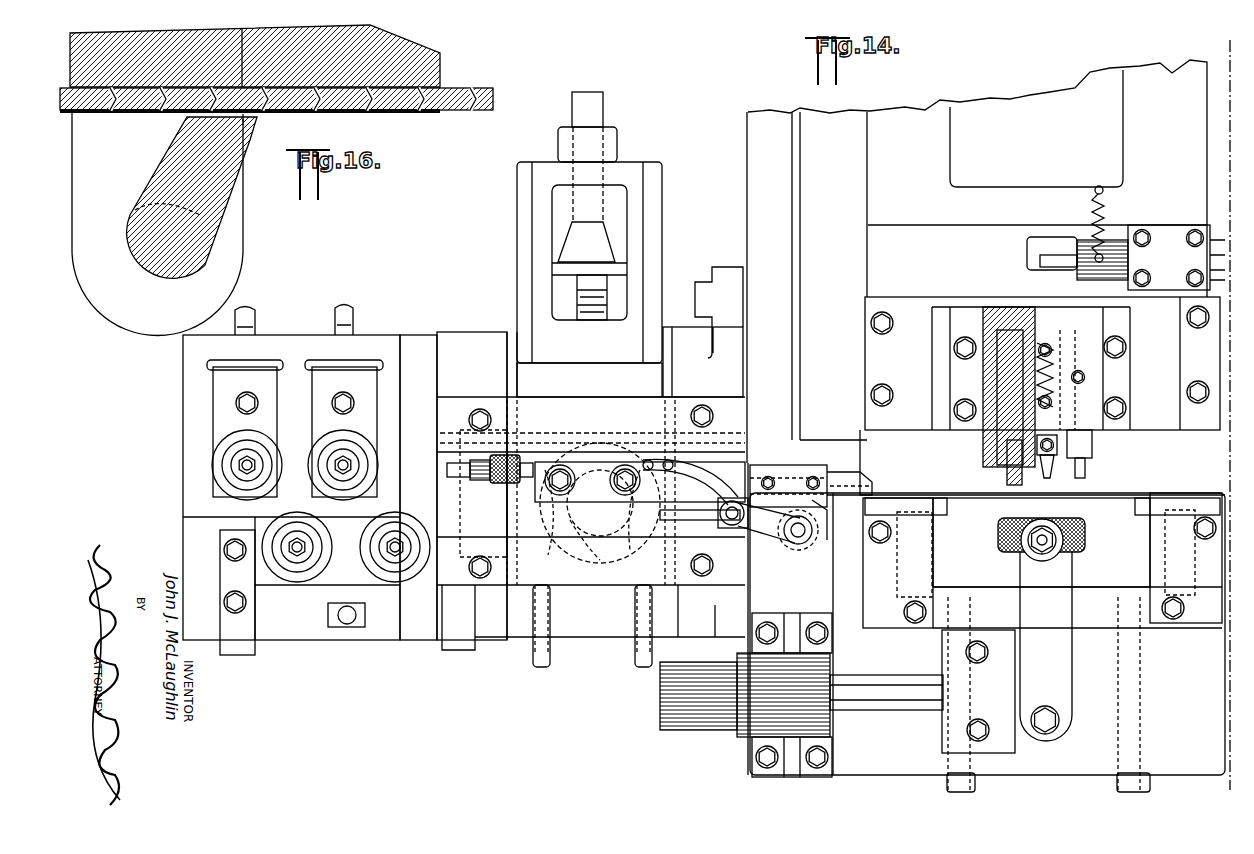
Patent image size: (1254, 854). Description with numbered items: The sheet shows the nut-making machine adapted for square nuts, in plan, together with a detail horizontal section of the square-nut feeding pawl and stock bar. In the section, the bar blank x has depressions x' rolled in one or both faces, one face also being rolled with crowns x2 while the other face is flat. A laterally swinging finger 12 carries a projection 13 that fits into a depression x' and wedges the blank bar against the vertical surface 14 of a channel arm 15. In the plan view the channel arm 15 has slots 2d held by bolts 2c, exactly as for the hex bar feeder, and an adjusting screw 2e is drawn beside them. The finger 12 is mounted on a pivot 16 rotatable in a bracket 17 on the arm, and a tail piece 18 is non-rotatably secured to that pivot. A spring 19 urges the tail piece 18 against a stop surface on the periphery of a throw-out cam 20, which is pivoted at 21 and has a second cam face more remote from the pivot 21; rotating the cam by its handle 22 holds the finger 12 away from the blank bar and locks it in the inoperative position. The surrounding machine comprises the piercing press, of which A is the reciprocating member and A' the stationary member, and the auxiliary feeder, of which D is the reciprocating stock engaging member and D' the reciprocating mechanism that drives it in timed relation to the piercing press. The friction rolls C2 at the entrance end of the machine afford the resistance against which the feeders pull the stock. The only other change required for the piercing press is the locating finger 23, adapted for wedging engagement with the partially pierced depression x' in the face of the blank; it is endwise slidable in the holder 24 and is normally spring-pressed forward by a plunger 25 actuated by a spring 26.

In FIG. 16, the channel arm 15 is at (403, 43).
In FIG. 14, the channel arm 15 is at (850, 478).
In FIG. 16, the bar blank x is at (284, 75).
In FIG. 16, the crowns x2 is at (448, 114).
In FIG. 16, the depressions x' is at (485, 121).
In FIG. 16, the vertical surface 14 is at (183, 120).
In FIG. 14, the vertical surface 14 is at (790, 480).
In FIG. 16, the projection 13 is at (235, 125).
In FIG. 16, the laterally swinging finger 12 is at (220, 190).
In FIG. 14, the laterally swinging finger 12 is at (822, 515).
In FIG. 16, the bracket 17 is at (238, 230).
In FIG. 14, the bracket 17 is at (812, 540).
In FIG. 16, the pivot 16 is at (183, 265).
In FIG. 14, the pivot 16 is at (810, 535).
In FIG. 14, the friction rolls C2 is at (300, 328).
In FIG. 14, the reciprocating mechanism D' is at (589, 244).
In FIG. 14, the reciprocating stock engaging member D is at (807, 287).
In FIG. 14, the reciprocating member A is at (1025, 257).
In FIG. 14, the stationary member A' is at (987, 634).
In FIG. 14, the slots 2d is at (555, 466).
In FIG. 14, the bolts 2c is at (615, 468).
In FIG. 14, the adjusting screw 2e is at (466, 478).
In FIG. 14, the spring 19 is at (700, 460).
In FIG. 14, the handle 22 is at (684, 522).
In FIG. 14, the pivot 21 is at (732, 526).
In FIG. 14, the throw-out cam 20 is at (765, 535).
In FIG. 14, the tail piece 18 is at (795, 540).
In FIG. 14, the spring 26 is at (1048, 348).
In FIG. 14, the plunger 25 is at (1000, 440).
In FIG. 14, the holder 24 is at (990, 462).
In FIG. 14, the locating finger 23 is at (1005, 482).